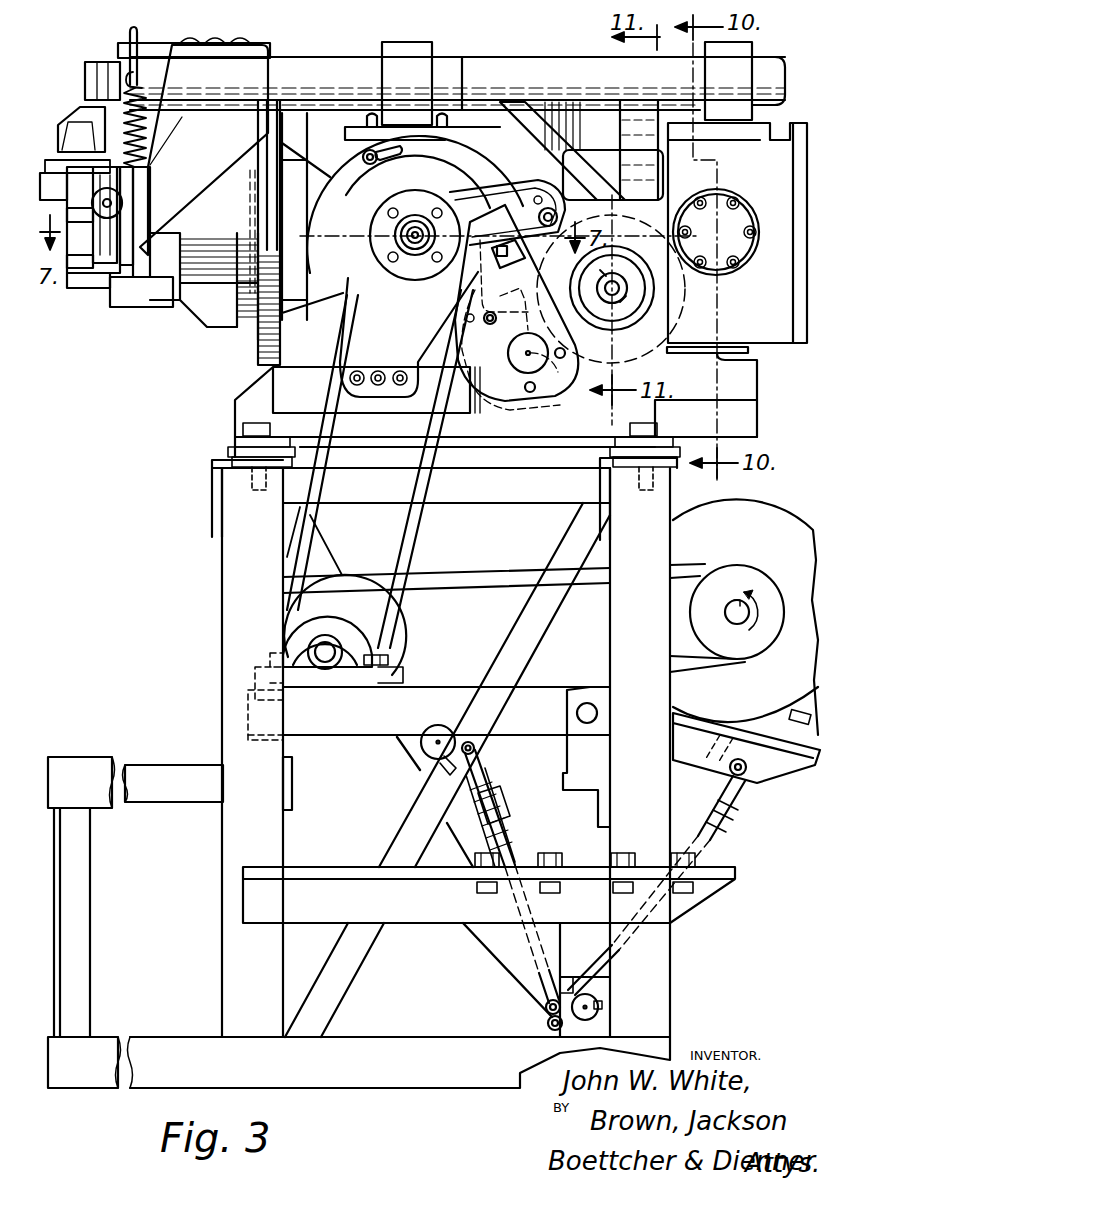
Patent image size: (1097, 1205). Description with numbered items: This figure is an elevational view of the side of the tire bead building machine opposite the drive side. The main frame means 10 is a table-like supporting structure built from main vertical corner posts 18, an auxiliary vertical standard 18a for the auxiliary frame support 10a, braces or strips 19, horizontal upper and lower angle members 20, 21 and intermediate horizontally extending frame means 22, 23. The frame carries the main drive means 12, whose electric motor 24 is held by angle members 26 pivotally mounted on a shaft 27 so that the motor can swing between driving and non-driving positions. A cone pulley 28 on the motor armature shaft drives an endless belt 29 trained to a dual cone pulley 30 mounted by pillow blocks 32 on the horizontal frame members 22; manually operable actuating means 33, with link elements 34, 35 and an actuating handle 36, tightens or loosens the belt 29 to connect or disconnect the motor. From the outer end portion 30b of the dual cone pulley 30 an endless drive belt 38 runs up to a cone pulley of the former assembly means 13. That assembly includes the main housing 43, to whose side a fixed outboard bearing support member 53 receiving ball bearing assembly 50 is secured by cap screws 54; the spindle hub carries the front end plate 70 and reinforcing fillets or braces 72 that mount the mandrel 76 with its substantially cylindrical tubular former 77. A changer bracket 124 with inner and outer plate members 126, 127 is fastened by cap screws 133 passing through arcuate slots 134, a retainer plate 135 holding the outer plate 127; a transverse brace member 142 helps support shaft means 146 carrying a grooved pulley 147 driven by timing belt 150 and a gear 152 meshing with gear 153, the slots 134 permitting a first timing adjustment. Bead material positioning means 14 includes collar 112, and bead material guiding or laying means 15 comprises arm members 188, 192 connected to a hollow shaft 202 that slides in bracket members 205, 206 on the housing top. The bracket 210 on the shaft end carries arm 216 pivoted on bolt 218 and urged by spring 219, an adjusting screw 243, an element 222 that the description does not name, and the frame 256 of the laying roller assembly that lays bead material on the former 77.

The main frame means 10 is at (217, 659).
The auxiliary frame support 10a is at (140, 758).
The main drive means 12 is at (778, 512).
The former assembly means 13 is at (88, 294).
The bead material positioning means 14 is at (135, 308).
The bead material guiding or laying means 15 is at (193, 212).
The main vertical corner posts 18 is at (272, 841).
The auxiliary vertical standard 18a is at (85, 949).
The braces or strips 19 is at (520, 629).
The horizontal upper angle members 20 is at (216, 495).
The horizontal lower angle members 21 is at (423, 1046).
The intermediate horizontally extending frame means 22 is at (356, 723).
The intermediate horizontally extending frame means 23 is at (180, 800).
The electric motor 24 is at (711, 638).
The angle members 26 is at (770, 770).
The shaft 27 is at (568, 718).
The cone pulley 28 is at (770, 632).
The endless belt 29 is at (472, 582).
The dual cone pulley 30 is at (407, 643).
The outer end portion of dual cone pulley 30b is at (346, 614).
The pillow blocks 32 is at (382, 670).
The manually operable actuating means 33 is at (700, 844).
The link element 34 is at (600, 966).
The link element 35 is at (520, 956).
The actuating handle 36 is at (442, 762).
The endless drive belt 38 is at (406, 541).
The main housing 43 is at (731, 280).
The ball bearing assembly 50 is at (538, 206).
The fixed outboard bearing support member 53 is at (409, 334).
The cap screws 54 is at (400, 374).
The front end plate 70 is at (262, 352).
The reinforcing fillets or braces 72 is at (290, 280).
The mandrel 76 is at (226, 330).
The substantially cylindrical tubular former 77 is at (105, 292).
The collar 112 is at (160, 300).
The changer bracket 124 is at (470, 203).
The inner plate member 126 is at (345, 172).
The outer plate member 127 is at (508, 303).
The cap screws 133 is at (372, 155).
The arcuate slots 134 is at (402, 152).
The retainer plate 135 is at (415, 196).
The transverse brace member 142 is at (523, 268).
The shaft means 146 is at (532, 362).
The grooved pulley 147 is at (563, 372).
The timing belt 150 is at (613, 282).
The gear 152 is at (477, 398).
The gear 153 is at (687, 313).
The arm member 188 is at (637, 112).
The arm member 192 is at (572, 125).
The hollow shaft 202 is at (450, 60).
The bracket member 205 is at (750, 50).
The bracket member 206 is at (408, 48).
The bracket 210 is at (204, 150).
The arm 216 is at (82, 115).
The bolt 218 is at (81, 136).
The spring 219 is at (150, 118).
The rod 222 is at (152, 50).
The adjusting screw 243 is at (120, 203).
The frame 256 is at (92, 70).